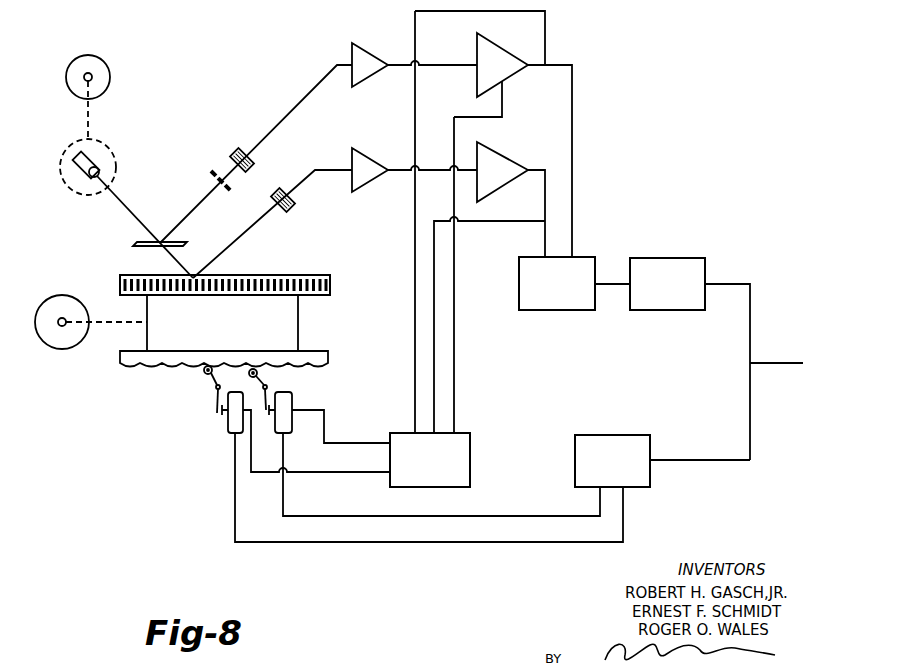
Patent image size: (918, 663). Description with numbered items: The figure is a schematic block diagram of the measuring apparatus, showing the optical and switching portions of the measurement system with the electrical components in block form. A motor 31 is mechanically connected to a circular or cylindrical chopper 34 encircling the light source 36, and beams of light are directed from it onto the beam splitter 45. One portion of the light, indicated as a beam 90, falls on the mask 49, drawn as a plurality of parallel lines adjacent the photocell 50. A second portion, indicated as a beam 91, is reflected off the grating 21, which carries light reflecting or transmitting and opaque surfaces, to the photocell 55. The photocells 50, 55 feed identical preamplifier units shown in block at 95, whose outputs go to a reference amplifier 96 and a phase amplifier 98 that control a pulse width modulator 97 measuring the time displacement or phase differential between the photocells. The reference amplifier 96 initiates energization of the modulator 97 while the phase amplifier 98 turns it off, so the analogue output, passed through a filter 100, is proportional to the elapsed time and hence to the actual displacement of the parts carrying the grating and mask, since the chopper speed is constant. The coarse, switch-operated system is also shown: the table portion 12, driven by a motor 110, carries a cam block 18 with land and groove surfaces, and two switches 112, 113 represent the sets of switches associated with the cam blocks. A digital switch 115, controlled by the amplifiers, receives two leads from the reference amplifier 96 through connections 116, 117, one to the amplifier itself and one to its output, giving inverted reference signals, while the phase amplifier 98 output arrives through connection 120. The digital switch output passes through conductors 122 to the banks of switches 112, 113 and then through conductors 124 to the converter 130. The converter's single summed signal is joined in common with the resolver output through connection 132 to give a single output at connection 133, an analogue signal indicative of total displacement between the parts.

The table portion 12 is at (250, 330).
The cam block 18 is at (165, 362).
The grating 21 is at (300, 268).
The motor 31 is at (103, 62).
The chopper 34 is at (68, 147).
The light source 36 is at (97, 163).
The beam splitter 45 is at (140, 242).
The mask 49 is at (221, 172).
The photocell 50 is at (238, 151).
The photocell 55 is at (277, 194).
The light beam 90 is at (195, 208).
The light beam 91 is at (240, 238).
The preamplifier unit 95 is at (366, 58).
The reference amplifier 96 is at (506, 74).
The pulse width modulator 97 is at (568, 293).
The phase amplifier 98 is at (506, 179).
The filter 100 is at (684, 293).
The motor 110 is at (65, 295).
The switch 112 is at (292, 402).
The switch 113 is at (232, 421).
The digital switch 115 is at (446, 469).
The connection 116 is at (454, 266).
The connection 117 is at (415, 358).
The connection 120 is at (434, 330).
The conductors 122 is at (340, 469).
The conductors 124 is at (272, 503).
The converter 130 is at (629, 471).
The connection 132 is at (750, 424).
The connection 133 is at (786, 357).